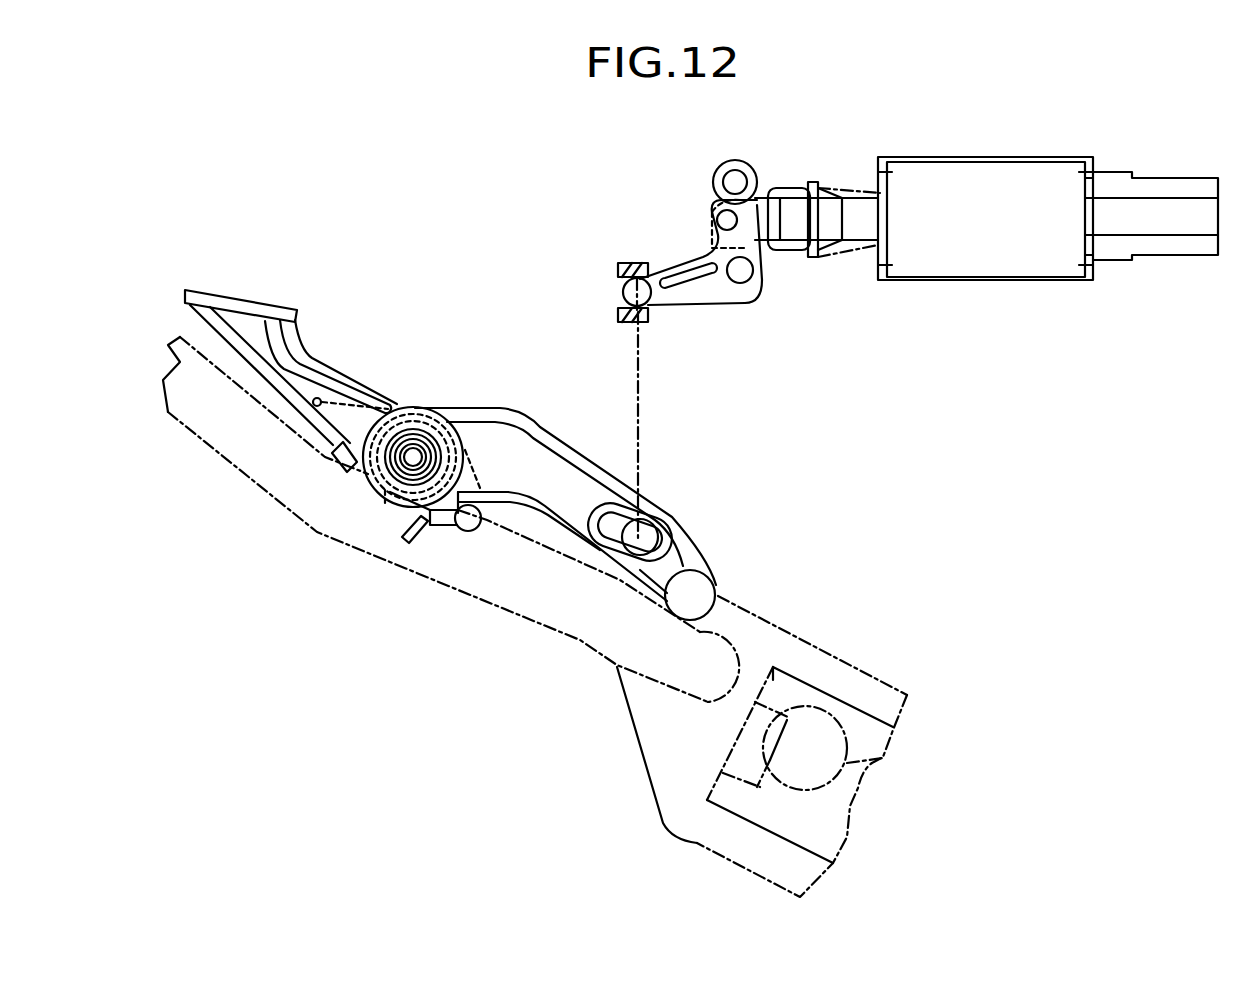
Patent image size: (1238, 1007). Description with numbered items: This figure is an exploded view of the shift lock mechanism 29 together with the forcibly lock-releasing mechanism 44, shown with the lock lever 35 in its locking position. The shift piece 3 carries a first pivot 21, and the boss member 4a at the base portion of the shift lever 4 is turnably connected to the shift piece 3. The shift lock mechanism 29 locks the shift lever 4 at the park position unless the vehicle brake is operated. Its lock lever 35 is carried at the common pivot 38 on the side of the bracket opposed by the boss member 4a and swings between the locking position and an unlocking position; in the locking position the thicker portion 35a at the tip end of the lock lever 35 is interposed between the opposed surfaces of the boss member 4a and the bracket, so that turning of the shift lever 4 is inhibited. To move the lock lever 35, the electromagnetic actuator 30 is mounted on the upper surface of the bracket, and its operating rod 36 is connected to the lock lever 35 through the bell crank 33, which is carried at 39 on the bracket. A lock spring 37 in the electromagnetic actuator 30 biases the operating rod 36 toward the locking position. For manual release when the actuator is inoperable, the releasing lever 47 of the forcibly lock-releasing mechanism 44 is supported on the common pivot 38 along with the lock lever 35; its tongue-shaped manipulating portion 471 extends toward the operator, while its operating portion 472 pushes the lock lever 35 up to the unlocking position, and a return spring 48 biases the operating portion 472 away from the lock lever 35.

The shift piece 3 is at (847, 835).
The shift lever 4 is at (317, 532).
The boss member 4a is at (643, 763).
The first pivot 21 is at (883, 758).
The shift lock mechanism 29 is at (846, 184).
The electromagnetic actuator 30 is at (1006, 232).
The bell crank 33 is at (668, 273).
The lock lever 35 is at (558, 443).
The thicker portion 35a is at (690, 583).
The operating rod 36 is at (788, 210).
The lock spring 37 is at (817, 252).
The common pivot 38 is at (413, 455).
The bell crank pivot 39 is at (737, 272).
The forcibly lock-releasing mechanism 44 is at (334, 357).
The releasing lever 47 is at (243, 305).
The manipulating portion 471 is at (289, 395).
The operating portion 472 is at (468, 533).
The return spring 48 is at (386, 503).